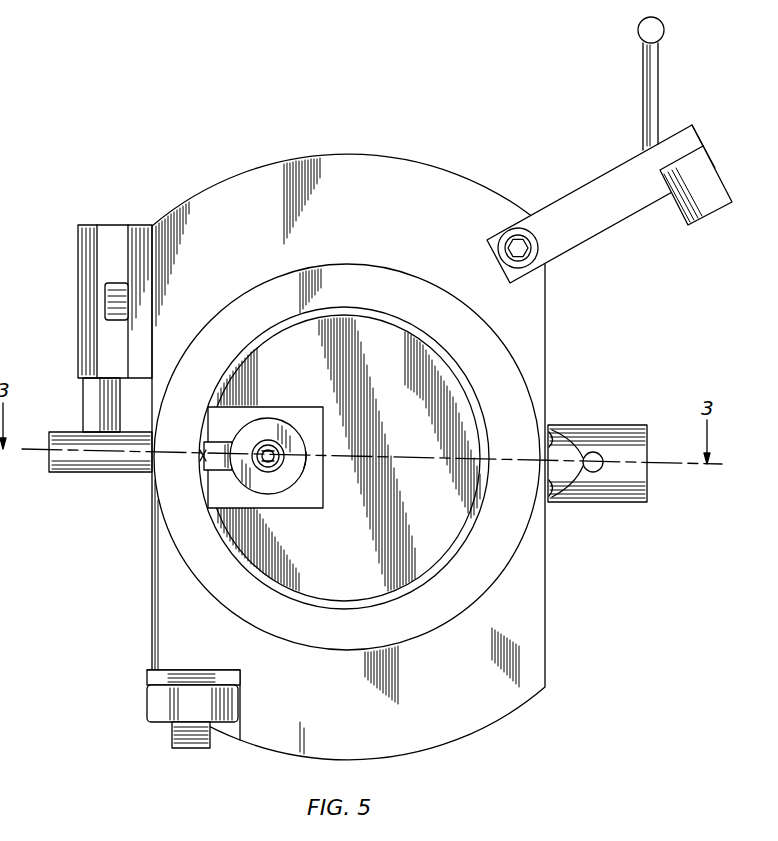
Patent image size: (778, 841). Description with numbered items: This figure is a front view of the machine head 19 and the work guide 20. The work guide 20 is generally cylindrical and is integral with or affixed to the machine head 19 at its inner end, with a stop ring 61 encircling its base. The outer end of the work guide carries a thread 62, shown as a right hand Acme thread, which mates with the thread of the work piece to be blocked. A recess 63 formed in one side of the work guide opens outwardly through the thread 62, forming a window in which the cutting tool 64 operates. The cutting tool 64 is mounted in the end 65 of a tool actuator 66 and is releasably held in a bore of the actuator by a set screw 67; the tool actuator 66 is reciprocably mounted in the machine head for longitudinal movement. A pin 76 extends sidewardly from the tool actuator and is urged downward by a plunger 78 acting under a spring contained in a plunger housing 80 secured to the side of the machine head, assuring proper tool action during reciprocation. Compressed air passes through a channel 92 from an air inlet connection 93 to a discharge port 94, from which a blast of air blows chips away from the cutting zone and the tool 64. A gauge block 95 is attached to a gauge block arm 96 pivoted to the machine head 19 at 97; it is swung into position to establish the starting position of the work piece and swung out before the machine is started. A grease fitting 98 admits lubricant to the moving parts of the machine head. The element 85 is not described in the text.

The machine head 19 is at (232, 192).
The work guide 20 is at (470, 412).
The stop ring 61 is at (505, 543).
The thread 62 is at (433, 577).
The recess 63 is at (318, 448).
The cutting tool 64 is at (220, 463).
The end of tool actuator 65 is at (288, 435).
The tool actuator 66 is at (310, 462).
The set screw 67 is at (270, 467).
The pin 76 is at (78, 473).
The plunger 78 is at (82, 398).
The plunger housing 80 is at (82, 263).
The shaft 85 is at (647, 468).
The channel 92 is at (203, 452).
The air inlet connection 93 is at (172, 733).
The discharge port 94 is at (203, 453).
The gauge block 95 is at (720, 195).
The gauge block arm 96 is at (590, 190).
The pivot 97 is at (512, 247).
The grease fitting 98 is at (597, 470).